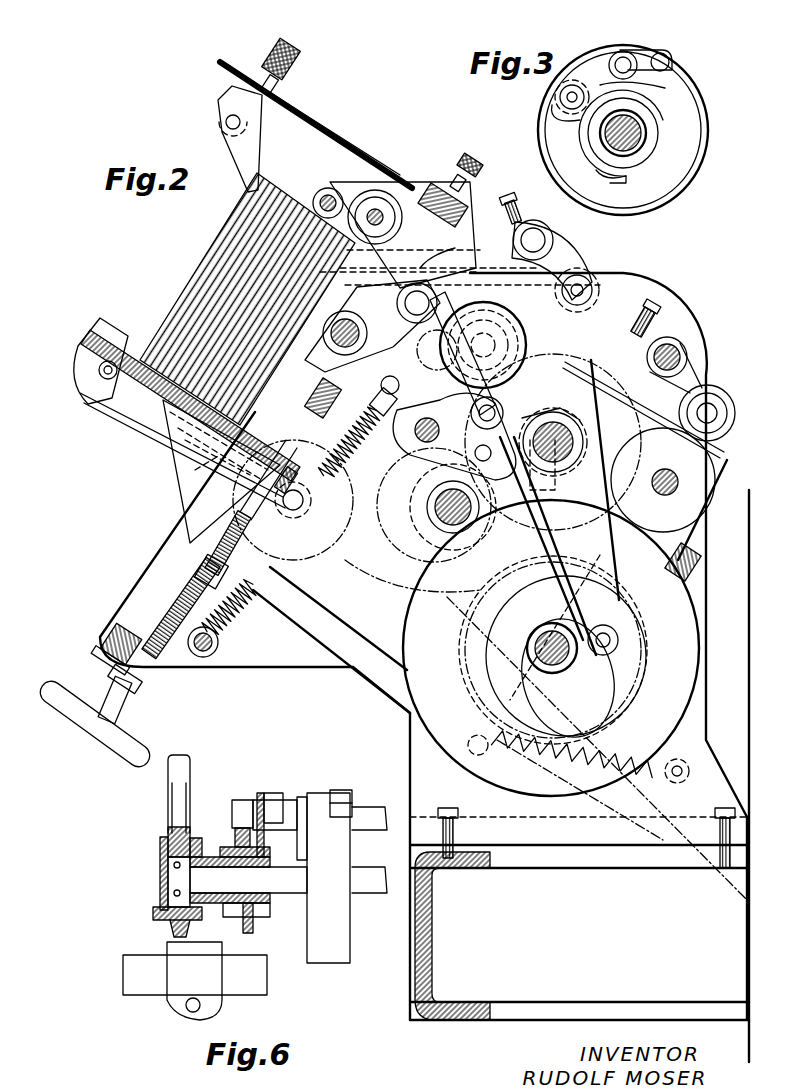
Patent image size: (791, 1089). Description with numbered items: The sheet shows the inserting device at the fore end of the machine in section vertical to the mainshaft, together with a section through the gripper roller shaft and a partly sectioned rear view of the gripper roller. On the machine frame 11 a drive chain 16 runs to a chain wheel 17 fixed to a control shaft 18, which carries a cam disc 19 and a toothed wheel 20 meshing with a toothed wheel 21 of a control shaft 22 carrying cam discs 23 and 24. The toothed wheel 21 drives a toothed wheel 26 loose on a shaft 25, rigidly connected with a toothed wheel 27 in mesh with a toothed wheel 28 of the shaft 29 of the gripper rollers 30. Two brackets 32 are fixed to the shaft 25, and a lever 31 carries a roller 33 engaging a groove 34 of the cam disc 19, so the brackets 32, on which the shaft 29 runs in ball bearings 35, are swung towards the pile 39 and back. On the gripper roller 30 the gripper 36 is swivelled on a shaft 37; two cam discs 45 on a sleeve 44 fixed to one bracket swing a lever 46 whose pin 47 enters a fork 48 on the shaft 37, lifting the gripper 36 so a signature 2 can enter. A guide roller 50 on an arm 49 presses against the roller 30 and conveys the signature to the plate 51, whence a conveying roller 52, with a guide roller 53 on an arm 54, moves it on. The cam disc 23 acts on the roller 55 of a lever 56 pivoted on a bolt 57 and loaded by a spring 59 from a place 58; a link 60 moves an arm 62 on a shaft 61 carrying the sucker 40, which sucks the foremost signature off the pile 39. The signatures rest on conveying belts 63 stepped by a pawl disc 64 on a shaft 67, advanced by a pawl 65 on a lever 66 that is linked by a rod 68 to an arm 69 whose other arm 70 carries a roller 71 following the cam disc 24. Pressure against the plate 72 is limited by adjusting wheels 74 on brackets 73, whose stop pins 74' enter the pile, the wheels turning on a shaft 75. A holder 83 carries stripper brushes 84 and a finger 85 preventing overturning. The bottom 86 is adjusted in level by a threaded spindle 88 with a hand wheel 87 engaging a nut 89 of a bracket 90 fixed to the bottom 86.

In FIG. 2, the signature 2 is at (278, 192).
In FIG. 2, the machine frame 11 is at (290, 668).
In FIG. 2, the drive chain 16 is at (725, 878).
In FIG. 2, the chain wheel 17 is at (640, 650).
In FIG. 2, the control shaft 18 is at (550, 632).
In FIG. 2, the cam disc 19 is at (413, 607).
In FIG. 2, the toothed wheel 20 is at (465, 652).
In FIG. 2, the toothed wheel 21 is at (392, 580).
In FIG. 2, the control shaft 22 is at (430, 508).
In FIG. 2, the cam disc 23 is at (425, 548).
In FIG. 2, the cam disc 24 is at (400, 492).
In FIG. 2, the shaft 25 is at (570, 425).
In FIG. 6, the shaft 25 is at (150, 990).
In FIG. 2, the toothed wheel 26 is at (585, 455).
In FIG. 2, the toothed wheel 27 is at (553, 434).
In FIG. 2, the toothed wheel 28 is at (514, 312).
In FIG. 2, the shaft 29 is at (500, 345).
In FIG. 3, the shaft 29 is at (640, 138).
In FIG. 6, the shaft 29 is at (190, 882).
In FIG. 2, the gripper roller 30 is at (434, 350).
In FIG. 3, the gripper roller 30 is at (668, 205).
In FIG. 6, the gripper roller 30 is at (332, 960).
In FIG. 2, the lever 31 is at (612, 548).
In FIG. 2, the bracket 32 is at (580, 332).
In FIG. 6, the bracket 32 is at (168, 818).
In FIG. 2, the roller 33 is at (598, 626).
In FIG. 2, the groove 34 is at (612, 682).
In FIG. 6, the ball bearing 35 is at (165, 878).
In FIG. 2, the gripper 36 is at (512, 250).
In FIG. 6, the gripper 36 is at (340, 790).
In FIG. 3, the shaft 37 is at (645, 55).
In FIG. 6, the shaft 37 is at (367, 810).
In FIG. 2, the pile 39 is at (215, 250).
In FIG. 2, the sucker 40 is at (403, 303).
In FIG. 3, the sleeve 44 is at (606, 136).
In FIG. 6, the sleeve 44 is at (210, 908).
In FIG. 3, the cam disc 45 is at (600, 172).
In FIG. 6, the cam disc 45 is at (228, 840).
In FIG. 3, the lever 46 is at (593, 62).
In FIG. 6, the lever 46 is at (258, 800).
In FIG. 3, the pin 47 is at (672, 56).
In FIG. 6, the pin 47 is at (267, 794).
In FIG. 3, the fork 48 is at (660, 50).
In FIG. 6, the fork 48 is at (283, 800).
In FIG. 2, the arm 49 is at (566, 258).
In FIG. 2, the guide roller 50 is at (592, 282).
In FIG. 2, the plate 51 is at (660, 420).
In FIG. 2, the conveying roller 52 is at (622, 500).
In FIG. 2, the guide roller 53 is at (691, 483).
In FIG. 2, the arm 54 is at (697, 345).
In FIG. 2, the roller 55 is at (488, 465).
In FIG. 2, the lever 56 is at (447, 462).
In FIG. 2, the bolt 57 is at (325, 478).
In FIG. 2, the place 58 is at (220, 645).
In FIG. 2, the spring 59 is at (238, 612).
In FIG. 2, the link 60 is at (470, 400).
In FIG. 2, the shaft 61 is at (368, 355).
In FIG. 2, the arm 62 is at (387, 370).
In FIG. 2, the conveying belt 63 is at (118, 345).
In FIG. 2, the pawl disc 64 is at (305, 562).
In FIG. 2, the pawl 65 is at (290, 472).
In FIG. 2, the lever 66 is at (222, 468).
In FIG. 2, the shaft 67 is at (309, 500).
In FIG. 2, the rod 68 is at (322, 622).
In FIG. 2, the arm 69 is at (500, 675).
In FIG. 2, the arm 70 is at (560, 542).
In FIG. 2, the roller 71 is at (552, 508).
In FIG. 2, the plate 72 is at (323, 406).
In FIG. 2, the bracket 73 is at (440, 215).
In FIG. 2, the adjusting wheel 74 is at (403, 205).
In FIG. 2, the stop pin 74' is at (348, 170).
In FIG. 2, the shaft 75 is at (390, 200).
In FIG. 2, the holder 83 is at (435, 195).
In FIG. 2, the brush 84 is at (438, 249).
In FIG. 2, the finger 85 is at (245, 158).
In FIG. 2, the bottom 86 is at (125, 415).
In FIG. 2, the hand wheel 87 is at (120, 745).
In FIG. 2, the threaded spindle 88 is at (175, 588).
In FIG. 2, the nut 89 is at (200, 553).
In FIG. 2, the bracket 90 is at (182, 485).